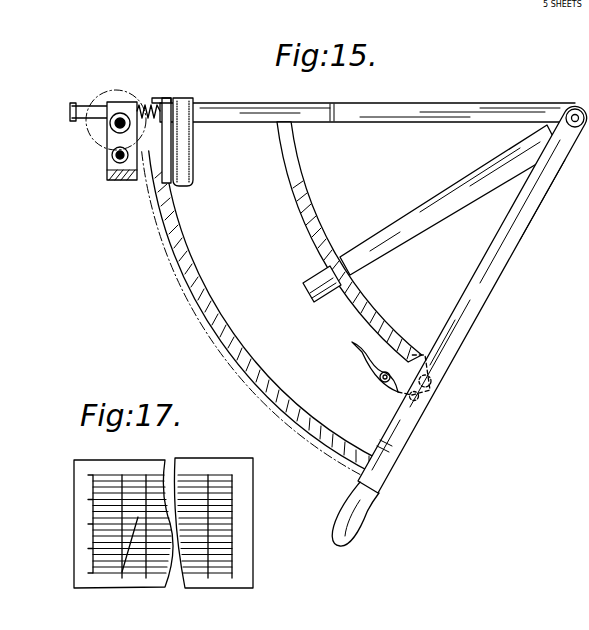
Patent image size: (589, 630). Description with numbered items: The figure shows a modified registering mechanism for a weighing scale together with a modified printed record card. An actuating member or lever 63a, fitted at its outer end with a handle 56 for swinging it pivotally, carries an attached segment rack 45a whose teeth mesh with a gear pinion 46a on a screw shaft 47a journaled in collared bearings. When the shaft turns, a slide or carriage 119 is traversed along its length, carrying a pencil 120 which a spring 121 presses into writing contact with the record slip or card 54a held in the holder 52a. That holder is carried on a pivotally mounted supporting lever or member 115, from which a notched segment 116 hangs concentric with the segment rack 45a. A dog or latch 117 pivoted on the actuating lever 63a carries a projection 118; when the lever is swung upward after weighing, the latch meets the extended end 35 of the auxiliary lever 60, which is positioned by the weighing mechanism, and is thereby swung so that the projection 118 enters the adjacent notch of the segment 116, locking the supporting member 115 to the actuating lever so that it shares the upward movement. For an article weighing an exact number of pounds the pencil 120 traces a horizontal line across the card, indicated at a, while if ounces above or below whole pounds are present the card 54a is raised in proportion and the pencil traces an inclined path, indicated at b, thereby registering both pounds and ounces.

In FIG. 15, the supporting lever or member 115 is at (397, 100).
In FIG. 15, the notched segment 116 is at (297, 202).
In FIG. 15, the dog or latch 117 is at (352, 344).
In FIG. 15, the projection 118 is at (390, 370).
In FIG. 15, the slide or carriage 119 is at (118, 104).
In FIG. 15, the pencil 120 is at (175, 98).
In FIG. 15, the spring 121 is at (150, 103).
In FIG. 15, the extended end of the auxiliary lever 35 is at (308, 283).
In FIG. 15, the segment rack 45a is at (213, 325).
In FIG. 15, the gear pinion 46a is at (124, 96).
In FIG. 15, the screw shaft 47a is at (116, 127).
In FIG. 15, the holder 52a is at (193, 160).
In FIG. 17, the record slip or card 54a is at (75, 527).
In FIG. 15, the handle 56 is at (364, 518).
In FIG. 15, the auxiliary lever 60 is at (453, 193).
In FIG. 15, the actuating member or lever 63a is at (472, 329).
In FIG. 17, the transverse or horizontal path a is at (106, 574).
In FIG. 17, the inclined path b is at (138, 518).